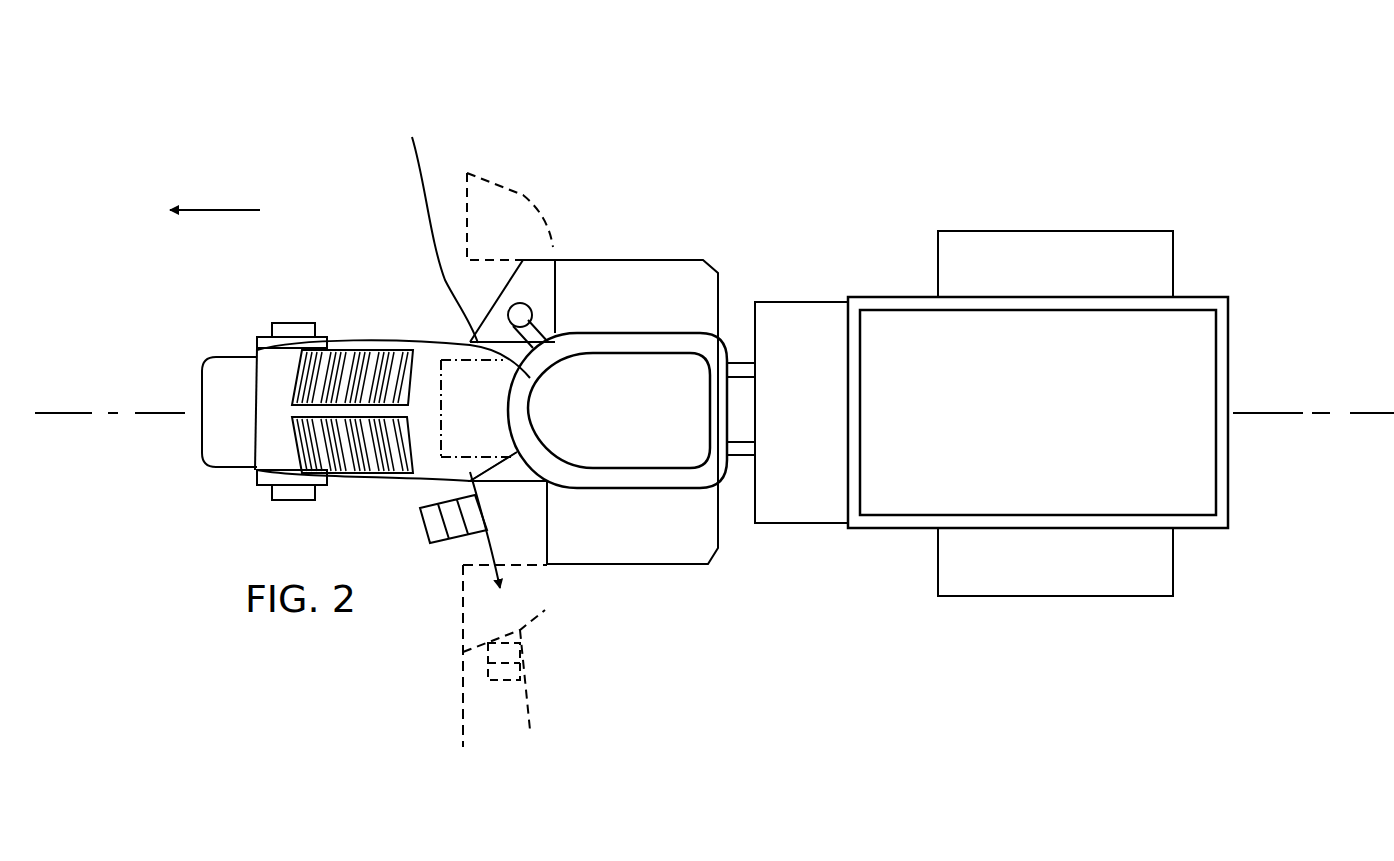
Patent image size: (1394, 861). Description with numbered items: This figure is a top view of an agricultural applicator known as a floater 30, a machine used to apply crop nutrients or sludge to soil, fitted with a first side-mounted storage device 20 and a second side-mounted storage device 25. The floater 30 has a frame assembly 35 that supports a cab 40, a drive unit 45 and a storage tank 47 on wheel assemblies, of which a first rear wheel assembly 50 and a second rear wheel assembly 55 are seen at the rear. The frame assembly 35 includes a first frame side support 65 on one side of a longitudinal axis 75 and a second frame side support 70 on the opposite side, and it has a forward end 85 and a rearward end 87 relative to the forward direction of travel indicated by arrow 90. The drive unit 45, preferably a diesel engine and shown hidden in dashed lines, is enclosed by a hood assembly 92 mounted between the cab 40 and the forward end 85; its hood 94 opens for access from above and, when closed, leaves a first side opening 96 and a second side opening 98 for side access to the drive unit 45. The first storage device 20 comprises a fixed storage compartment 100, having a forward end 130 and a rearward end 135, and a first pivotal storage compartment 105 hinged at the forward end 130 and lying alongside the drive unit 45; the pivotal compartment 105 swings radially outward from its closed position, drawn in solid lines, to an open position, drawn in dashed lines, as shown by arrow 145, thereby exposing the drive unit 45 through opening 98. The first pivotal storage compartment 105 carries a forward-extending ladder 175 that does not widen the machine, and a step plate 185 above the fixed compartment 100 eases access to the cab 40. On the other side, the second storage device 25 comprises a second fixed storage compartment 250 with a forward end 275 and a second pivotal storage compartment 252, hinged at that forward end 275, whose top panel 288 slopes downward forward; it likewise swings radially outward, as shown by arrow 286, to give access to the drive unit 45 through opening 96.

The first side-mounted storage device 20 is at (612, 597).
The second side-mounted storage device 25 is at (633, 230).
The floater 30 is at (820, 117).
The frame assembly 35 is at (737, 353).
The cab 40 is at (637, 378).
The drive unit 45 is at (466, 374).
The storage tank 47 is at (1212, 337).
The first rear wheel assembly 50 is at (1147, 612).
The second rear wheel assembly 55 is at (1065, 223).
The first frame side support 65 is at (742, 458).
The second frame side support 70 is at (745, 378).
The longitudinal axis 75 is at (152, 413).
The forward end 85 is at (255, 500).
The rearward end 87 is at (1222, 267).
The arrow representing forward direction of travel 90 is at (225, 208).
The hood assembly 92 is at (430, 362).
The hood 94 is at (435, 455).
The first side opening 96 is at (500, 468).
The second side opening 98 is at (490, 347).
The fixed storage compartment 100 is at (665, 568).
The first pivotal storage compartment 105 is at (495, 540).
The forward end 130 is at (558, 572).
The rearward end 135 is at (718, 568).
The arrow 145 is at (498, 545).
The ladder 175 is at (422, 530).
The step plate 185 is at (637, 530).
The second fixed storage compartment 250 is at (647, 290).
The second pivotal storage compartment 252 is at (540, 158).
The forward end 275 is at (557, 260).
The arrow 286 is at (497, 232).
The top panel 288 is at (540, 280).